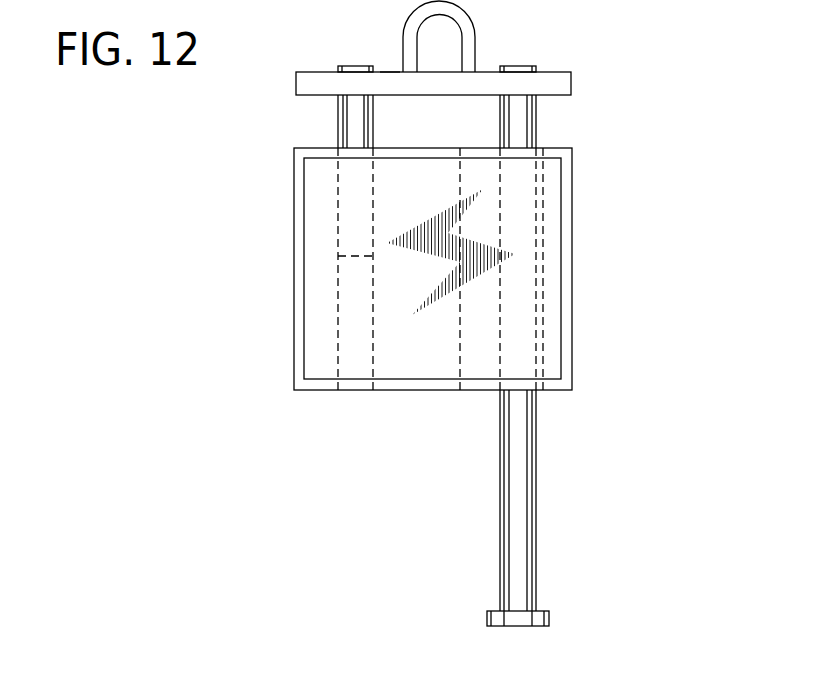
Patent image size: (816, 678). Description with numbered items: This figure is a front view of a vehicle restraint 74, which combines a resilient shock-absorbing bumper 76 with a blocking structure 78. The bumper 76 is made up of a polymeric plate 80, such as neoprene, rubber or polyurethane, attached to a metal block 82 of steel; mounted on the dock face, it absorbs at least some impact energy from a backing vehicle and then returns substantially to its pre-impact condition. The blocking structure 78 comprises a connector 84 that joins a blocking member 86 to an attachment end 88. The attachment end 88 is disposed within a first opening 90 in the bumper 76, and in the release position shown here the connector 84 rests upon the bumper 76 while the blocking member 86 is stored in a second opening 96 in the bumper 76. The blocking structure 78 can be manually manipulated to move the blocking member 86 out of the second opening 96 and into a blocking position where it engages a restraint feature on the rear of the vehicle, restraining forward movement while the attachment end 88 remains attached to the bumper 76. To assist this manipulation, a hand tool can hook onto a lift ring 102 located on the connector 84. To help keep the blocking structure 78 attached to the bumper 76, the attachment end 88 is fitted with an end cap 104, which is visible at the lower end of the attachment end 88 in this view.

The vehicle restraint 74 is at (684, 139).
The resilient shock-absorbing bumper 76 is at (294, 198).
The blocking structure 78 is at (374, 105).
The polymeric plate 80 is at (338, 278).
The metal block 82 is at (294, 238).
The connector 84 is at (388, 70).
The blocking member 86 is at (338, 117).
The attachment end 88 is at (536, 109).
The first opening 90 is at (460, 348).
The second opening 96 is at (338, 348).
The lift ring 102 is at (476, 28).
The end cap 104 is at (486, 618).